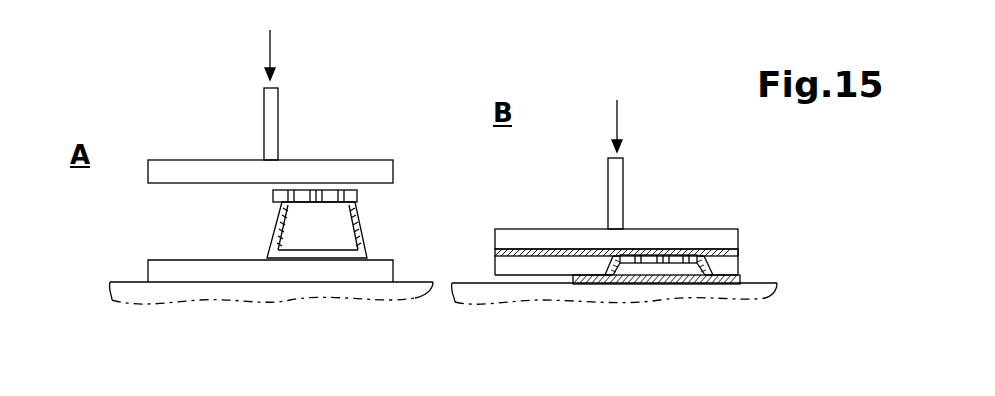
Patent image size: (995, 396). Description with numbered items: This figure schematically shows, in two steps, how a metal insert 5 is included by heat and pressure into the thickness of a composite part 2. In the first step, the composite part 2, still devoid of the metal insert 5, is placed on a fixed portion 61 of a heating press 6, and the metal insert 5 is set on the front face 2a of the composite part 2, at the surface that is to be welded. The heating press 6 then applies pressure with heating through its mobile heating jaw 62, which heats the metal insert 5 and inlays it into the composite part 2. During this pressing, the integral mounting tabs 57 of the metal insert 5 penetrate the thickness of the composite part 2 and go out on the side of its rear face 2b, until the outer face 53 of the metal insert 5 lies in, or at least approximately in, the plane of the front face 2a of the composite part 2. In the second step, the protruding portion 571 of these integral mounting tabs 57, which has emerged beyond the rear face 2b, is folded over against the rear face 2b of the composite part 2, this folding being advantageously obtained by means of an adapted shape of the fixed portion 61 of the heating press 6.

The heating press 6 is at (222, 97).
The mobile heating jaw 62 is at (170, 172).
The outer face 53 is at (302, 176).
The metal insert 5 is at (330, 192).
The integral mounting tabs 57 is at (270, 228).
The composite part 2 is at (203, 262).
The fixed portion 61 is at (132, 291).
The front face 2a is at (181, 277).
The rear face 2b is at (283, 300).
The protruding portion 571 is at (602, 284).